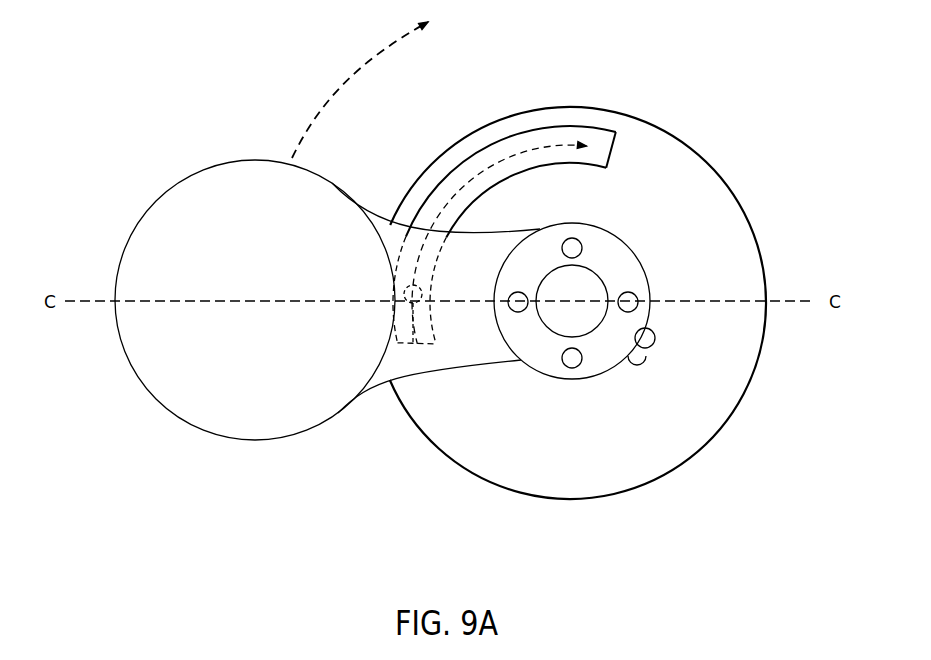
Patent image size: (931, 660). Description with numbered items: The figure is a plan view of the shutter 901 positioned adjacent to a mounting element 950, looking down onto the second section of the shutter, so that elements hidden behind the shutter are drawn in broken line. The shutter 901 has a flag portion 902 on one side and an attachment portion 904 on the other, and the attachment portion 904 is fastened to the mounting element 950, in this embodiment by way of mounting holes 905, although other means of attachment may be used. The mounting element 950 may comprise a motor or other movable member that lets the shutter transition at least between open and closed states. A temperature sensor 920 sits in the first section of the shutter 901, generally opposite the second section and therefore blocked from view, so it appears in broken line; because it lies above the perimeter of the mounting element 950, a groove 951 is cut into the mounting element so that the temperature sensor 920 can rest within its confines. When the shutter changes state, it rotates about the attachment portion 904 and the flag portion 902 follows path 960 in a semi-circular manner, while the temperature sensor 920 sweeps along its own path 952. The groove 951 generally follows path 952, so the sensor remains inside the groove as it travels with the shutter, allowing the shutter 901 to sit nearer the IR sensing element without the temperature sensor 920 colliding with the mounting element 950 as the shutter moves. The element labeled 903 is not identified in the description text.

The shutter 901 is at (178, 148).
The flag portion 902 is at (260, 353).
The arm plate 903 is at (462, 353).
The attachment portion 904 is at (535, 358).
The mounting holes 905 is at (522, 313).
The temperature sensor 920 is at (408, 318).
The mounting element 950 is at (673, 228).
The groove 951 is at (497, 139).
The path 952 is at (545, 148).
The path 960 is at (352, 70).